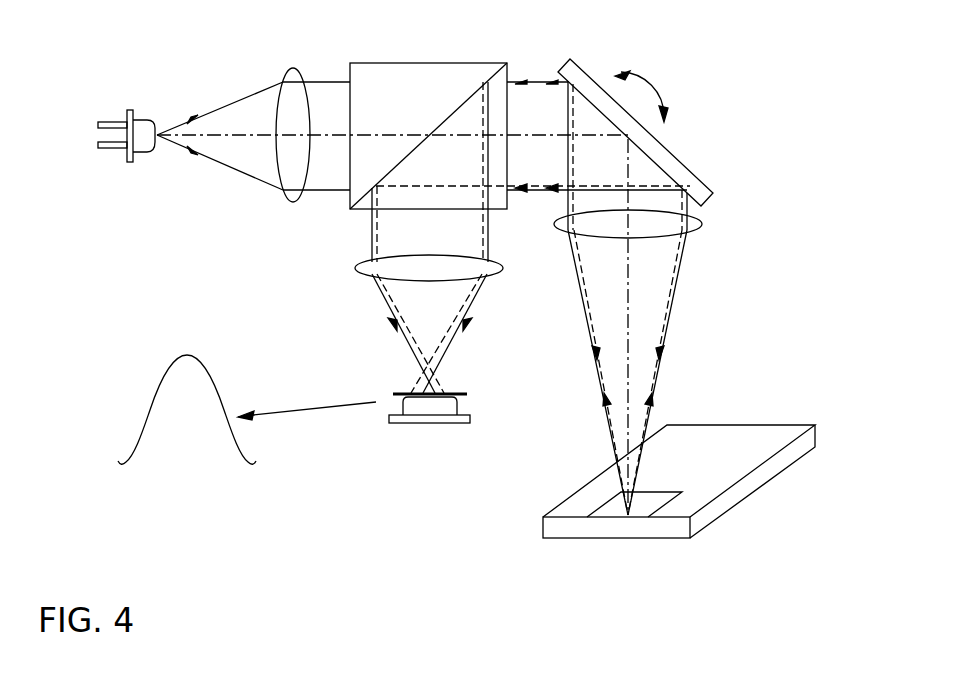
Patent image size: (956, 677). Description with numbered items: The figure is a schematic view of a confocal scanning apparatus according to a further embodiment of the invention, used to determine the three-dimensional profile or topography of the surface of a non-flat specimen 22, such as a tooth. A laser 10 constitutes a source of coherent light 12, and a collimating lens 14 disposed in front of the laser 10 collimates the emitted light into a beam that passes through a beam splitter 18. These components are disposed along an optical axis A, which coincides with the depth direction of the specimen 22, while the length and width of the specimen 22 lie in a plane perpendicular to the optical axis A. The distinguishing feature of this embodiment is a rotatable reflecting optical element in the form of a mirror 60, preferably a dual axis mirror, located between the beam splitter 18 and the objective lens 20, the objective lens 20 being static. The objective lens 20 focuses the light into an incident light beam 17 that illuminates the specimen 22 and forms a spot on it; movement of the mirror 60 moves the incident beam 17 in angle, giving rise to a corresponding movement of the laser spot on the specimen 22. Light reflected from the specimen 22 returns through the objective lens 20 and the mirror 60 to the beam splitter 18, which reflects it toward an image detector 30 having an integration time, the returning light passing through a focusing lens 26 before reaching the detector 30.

The optical axis A is at (240, 134).
The laser 10 is at (130, 162).
The source of coherent light 12 is at (143, 151).
The collimating lens 14 is at (293, 201).
The beam splitter 18 is at (425, 63).
The mirror 60 is at (698, 185).
The objective lens 20 is at (703, 224).
The incident light beam 17 is at (670, 311).
The specimen 22 is at (713, 440).
The focusing lens 26 is at (358, 266).
The image detector 30 is at (450, 408).